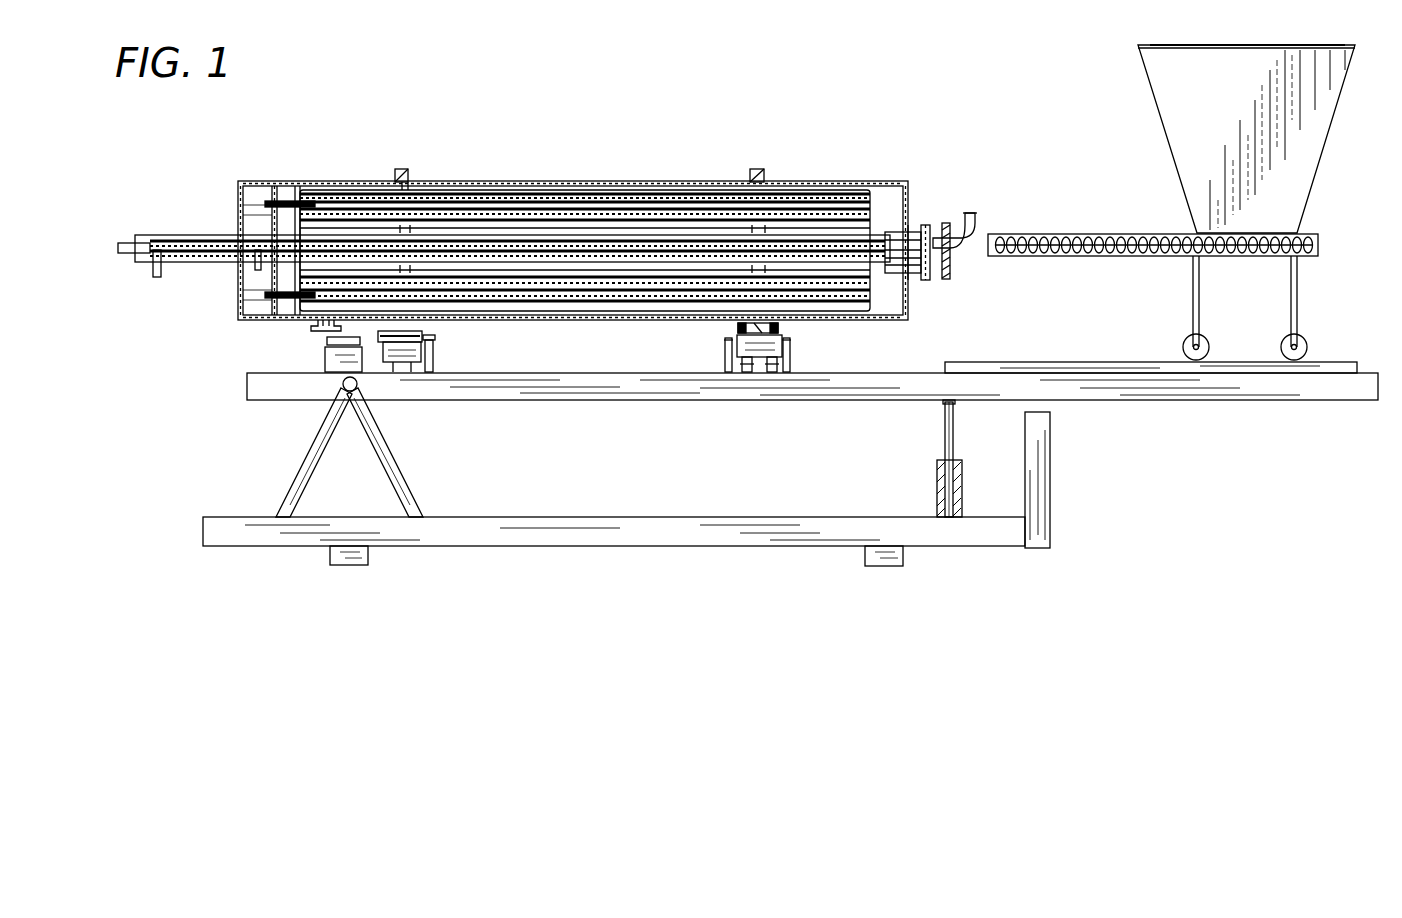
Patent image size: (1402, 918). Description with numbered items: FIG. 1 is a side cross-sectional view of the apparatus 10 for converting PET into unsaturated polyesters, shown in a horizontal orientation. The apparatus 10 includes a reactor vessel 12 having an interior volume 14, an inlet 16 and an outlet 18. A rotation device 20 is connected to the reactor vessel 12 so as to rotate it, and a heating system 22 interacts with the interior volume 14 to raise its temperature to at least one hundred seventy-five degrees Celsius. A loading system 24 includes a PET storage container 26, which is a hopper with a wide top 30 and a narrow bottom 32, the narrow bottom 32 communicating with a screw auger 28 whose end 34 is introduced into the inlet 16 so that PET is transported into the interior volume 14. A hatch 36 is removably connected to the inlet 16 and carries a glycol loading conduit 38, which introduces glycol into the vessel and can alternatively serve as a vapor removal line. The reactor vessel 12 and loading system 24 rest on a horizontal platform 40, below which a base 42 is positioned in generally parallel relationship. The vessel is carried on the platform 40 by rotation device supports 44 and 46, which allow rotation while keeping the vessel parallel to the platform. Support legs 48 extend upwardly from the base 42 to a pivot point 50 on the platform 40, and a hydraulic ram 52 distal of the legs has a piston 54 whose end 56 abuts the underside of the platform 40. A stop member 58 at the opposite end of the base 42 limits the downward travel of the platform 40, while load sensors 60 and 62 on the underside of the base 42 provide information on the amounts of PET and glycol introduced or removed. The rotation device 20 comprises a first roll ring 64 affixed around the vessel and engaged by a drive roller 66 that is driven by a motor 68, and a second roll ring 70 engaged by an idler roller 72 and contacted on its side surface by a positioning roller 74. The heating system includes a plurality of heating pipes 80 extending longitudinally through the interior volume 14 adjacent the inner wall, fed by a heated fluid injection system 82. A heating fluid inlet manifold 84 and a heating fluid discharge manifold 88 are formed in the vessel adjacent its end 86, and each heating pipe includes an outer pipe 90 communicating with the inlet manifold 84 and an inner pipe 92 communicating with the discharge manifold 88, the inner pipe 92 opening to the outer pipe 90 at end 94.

The apparatus 10 is at (875, 134).
The reactor vessel 12 is at (636, 186).
The interior volume 14 is at (337, 186).
The inlet 16 is at (915, 228).
The outlet 18 is at (307, 326).
The rotation device 20 is at (412, 176).
The heating system 22 is at (203, 236).
The loading system 24 is at (1118, 154).
The PET storage container 26 is at (1318, 144).
The screw auger 28 is at (1143, 254).
The wide top 30 is at (1212, 43).
The narrow bottom 32 is at (1297, 233).
The end 34 is at (995, 235).
The hatch 36 is at (952, 268).
The glycol loading conduit 38 is at (978, 212).
The platform 40 is at (628, 398).
The base 42 is at (590, 517).
The rotation device support 44 is at (436, 346).
The rotation device support 46 is at (795, 346).
The support legs 48 is at (405, 490).
The pivot point 50 is at (343, 390).
The hydraulic ram 52 is at (937, 490).
The piston 54 is at (956, 448).
The end 56 is at (946, 402).
The stop member 58 is at (1045, 474).
The load sensor 60 is at (330, 556).
The load sensor 62 is at (864, 558).
The first roll ring 64 is at (408, 170).
The drive roller 66 is at (426, 336).
The motor 68 is at (327, 343).
The second roll ring 70 is at (767, 175).
The idler roller 72 is at (776, 342).
The positioning roller 74 is at (727, 330).
The heating pipes 80 is at (704, 185).
The heated fluid injection system 82 is at (132, 243).
The heating fluid inlet manifold 84 is at (292, 186).
The end 86 is at (246, 298).
The heating fluid discharge manifold 88 is at (247, 210).
The outer pipe 90 is at (577, 190).
The inner pipe 92 is at (512, 200).
The end 94 is at (880, 230).